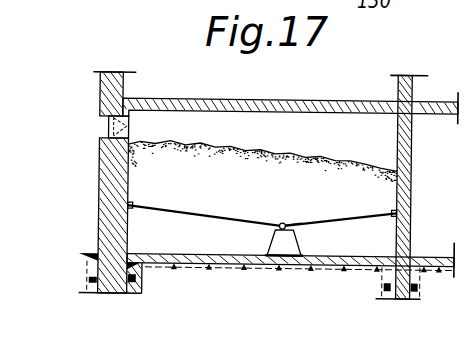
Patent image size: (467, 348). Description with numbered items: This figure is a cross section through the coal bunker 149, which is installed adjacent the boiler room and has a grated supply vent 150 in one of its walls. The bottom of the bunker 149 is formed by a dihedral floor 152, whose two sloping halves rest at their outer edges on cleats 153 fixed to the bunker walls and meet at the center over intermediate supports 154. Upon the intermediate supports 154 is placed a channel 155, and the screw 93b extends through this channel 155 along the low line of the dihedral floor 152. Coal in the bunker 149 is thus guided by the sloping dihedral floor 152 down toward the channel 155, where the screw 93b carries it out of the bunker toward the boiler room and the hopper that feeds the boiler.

The coal bunker 149 is at (263, 149).
The grated supply vent 150 is at (107, 128).
The dihedral floor 152 is at (208, 216).
The cleats 153 is at (133, 209).
The intermediate supports 154 is at (297, 240).
The channel 155 is at (280, 224).
The screw 93b is at (286, 224).